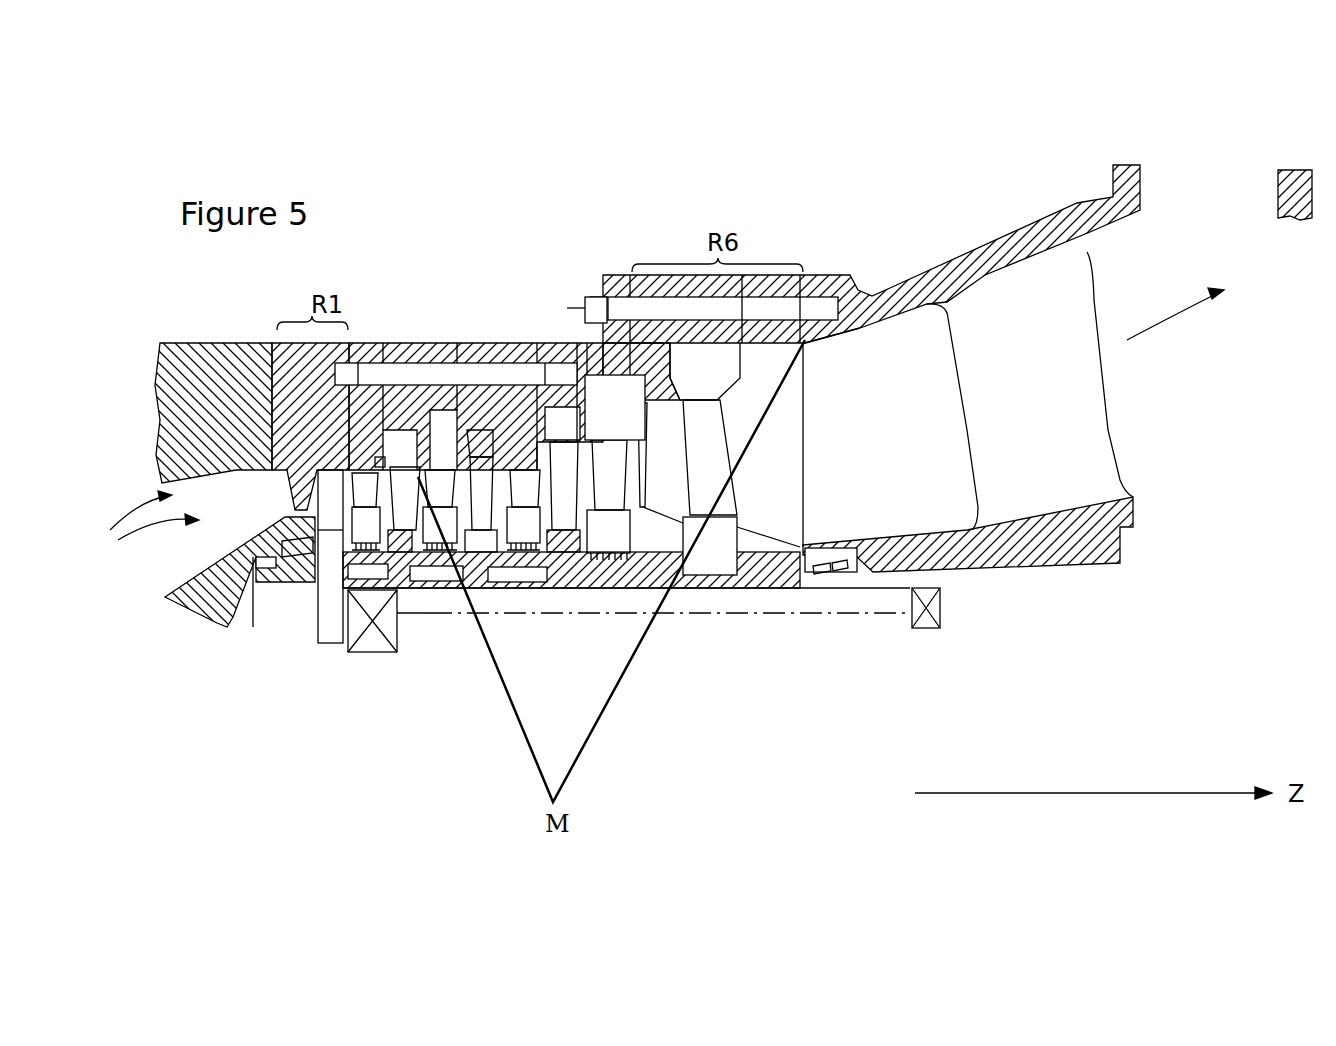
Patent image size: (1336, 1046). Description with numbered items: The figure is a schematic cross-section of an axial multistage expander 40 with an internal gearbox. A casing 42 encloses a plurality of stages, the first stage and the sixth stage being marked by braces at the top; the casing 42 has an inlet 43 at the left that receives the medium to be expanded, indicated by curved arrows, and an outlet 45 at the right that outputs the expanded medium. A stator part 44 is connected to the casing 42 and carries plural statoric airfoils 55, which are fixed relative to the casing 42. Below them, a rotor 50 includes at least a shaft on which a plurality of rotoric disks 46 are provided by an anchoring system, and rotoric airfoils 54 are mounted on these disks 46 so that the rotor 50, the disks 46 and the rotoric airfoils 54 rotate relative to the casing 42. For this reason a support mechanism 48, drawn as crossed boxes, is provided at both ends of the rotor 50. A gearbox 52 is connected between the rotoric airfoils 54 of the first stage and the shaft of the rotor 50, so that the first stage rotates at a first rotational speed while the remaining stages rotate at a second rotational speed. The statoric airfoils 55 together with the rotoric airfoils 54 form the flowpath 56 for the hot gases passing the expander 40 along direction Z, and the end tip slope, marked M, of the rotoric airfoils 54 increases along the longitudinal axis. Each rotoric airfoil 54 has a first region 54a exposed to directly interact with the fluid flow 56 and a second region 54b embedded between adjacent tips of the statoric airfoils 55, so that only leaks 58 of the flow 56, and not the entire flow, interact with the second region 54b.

The multistage expander 40 is at (724, 111).
The casing 42 is at (193, 600).
The inlet 43 is at (110, 566).
The stator part 44 is at (697, 328).
The outlet 45 is at (1215, 192).
The rotoric disk 46 is at (563, 588).
The support mechanism 48 is at (370, 638).
The rotor 50 is at (847, 603).
The gearbox 52 is at (333, 615).
The rotoric airfoils 54 is at (770, 420).
The first region 54a is at (805, 340).
The second region 54b is at (802, 587).
The statoric airfoils 55 is at (303, 487).
The flowpath 56 is at (150, 530).
The leaks 58 is at (557, 585).